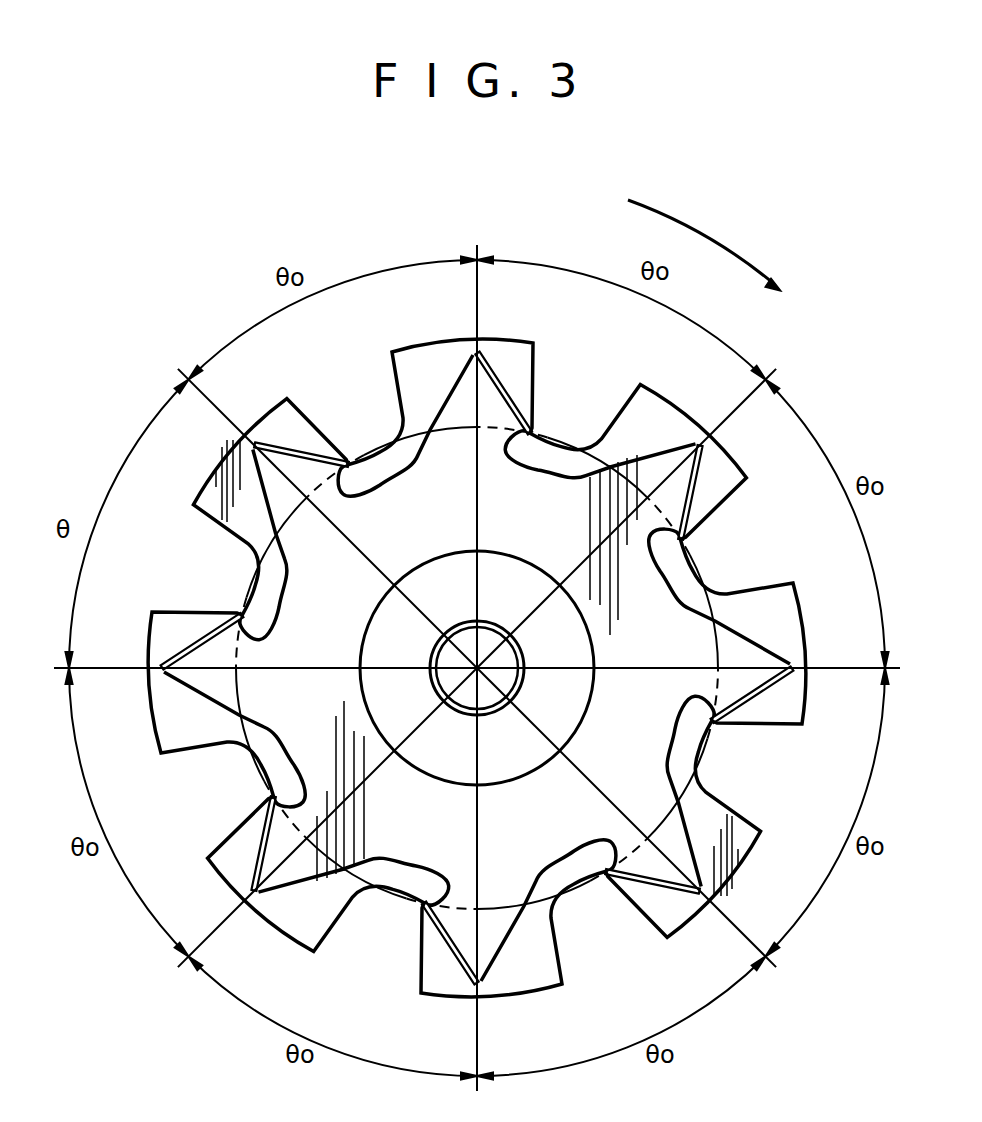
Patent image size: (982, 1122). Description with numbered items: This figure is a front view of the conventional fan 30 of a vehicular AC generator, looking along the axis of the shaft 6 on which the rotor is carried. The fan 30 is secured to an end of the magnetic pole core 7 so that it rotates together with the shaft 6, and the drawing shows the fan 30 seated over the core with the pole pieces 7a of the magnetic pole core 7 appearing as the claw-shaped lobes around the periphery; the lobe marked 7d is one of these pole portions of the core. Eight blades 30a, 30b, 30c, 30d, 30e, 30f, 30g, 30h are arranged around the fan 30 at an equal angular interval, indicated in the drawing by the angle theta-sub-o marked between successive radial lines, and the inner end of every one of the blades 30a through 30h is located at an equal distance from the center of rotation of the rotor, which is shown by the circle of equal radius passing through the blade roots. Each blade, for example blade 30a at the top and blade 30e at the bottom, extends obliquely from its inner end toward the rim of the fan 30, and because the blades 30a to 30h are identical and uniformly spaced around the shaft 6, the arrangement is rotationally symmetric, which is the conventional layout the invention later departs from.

The shaft 6 is at (508, 657).
The magnetic pole core 7 is at (506, 343).
The pole pieces 7a is at (420, 357).
The cutter tooth 7d is at (718, 465).
The fan 30 is at (545, 468).
The blade 30a is at (505, 385).
The blade 30b is at (698, 493).
The blade 30c is at (743, 707).
The blade 30d is at (642, 883).
The blade 30e is at (450, 950).
The blade 30f is at (258, 845).
The blade 30g is at (195, 637).
The blade 30h is at (245, 440).